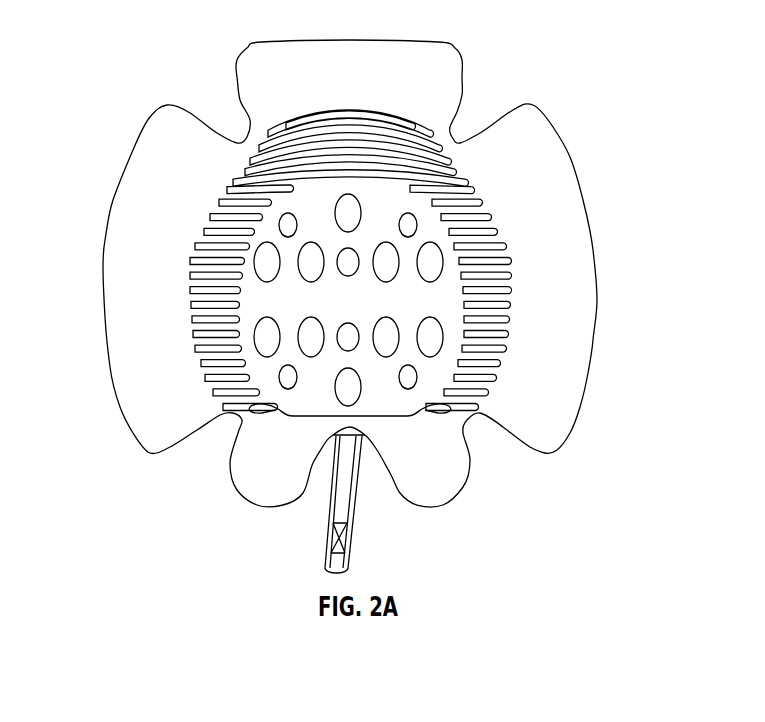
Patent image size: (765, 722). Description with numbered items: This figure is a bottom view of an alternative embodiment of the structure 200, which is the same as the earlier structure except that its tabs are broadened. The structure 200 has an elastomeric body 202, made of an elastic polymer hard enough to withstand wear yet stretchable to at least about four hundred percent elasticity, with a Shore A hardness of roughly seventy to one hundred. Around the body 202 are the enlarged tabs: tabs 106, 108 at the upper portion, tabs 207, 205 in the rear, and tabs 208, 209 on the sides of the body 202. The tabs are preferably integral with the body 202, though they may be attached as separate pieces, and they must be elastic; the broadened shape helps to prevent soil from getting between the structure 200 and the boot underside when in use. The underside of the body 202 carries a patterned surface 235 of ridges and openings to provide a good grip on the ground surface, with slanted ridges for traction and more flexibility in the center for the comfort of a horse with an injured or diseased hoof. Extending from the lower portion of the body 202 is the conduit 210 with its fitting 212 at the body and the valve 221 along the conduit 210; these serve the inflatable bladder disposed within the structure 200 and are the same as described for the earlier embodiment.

The structure 200 is at (142, 80).
The body 202 is at (350, 277).
The tab 106 is at (452, 50).
The tab 108 is at (253, 48).
The tab 205 is at (250, 506).
The tab 207 is at (447, 507).
The tab 208 is at (595, 345).
The tab 209 is at (105, 335).
The conduit 210 is at (357, 498).
The fitting 212 is at (330, 436).
The valve 221 is at (327, 543).
The ridges 235 is at (493, 228).